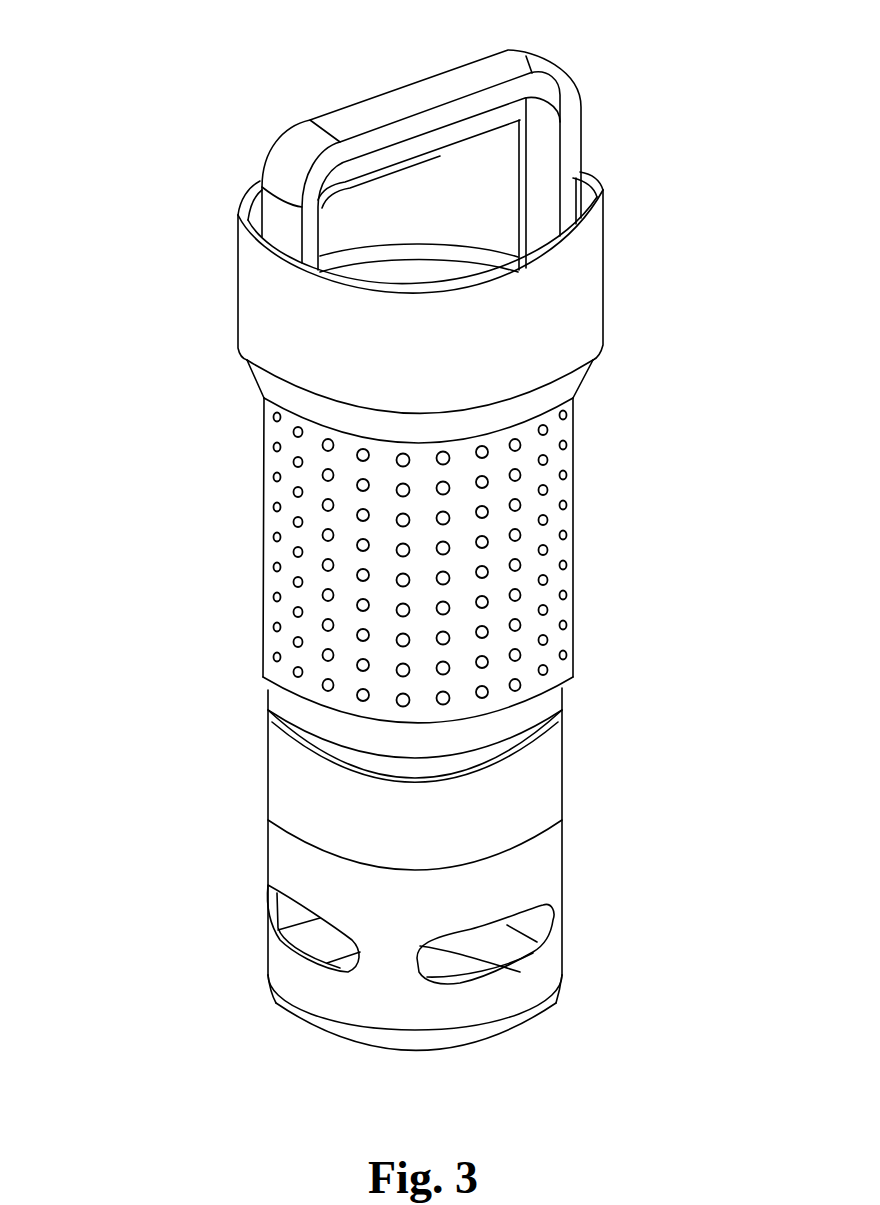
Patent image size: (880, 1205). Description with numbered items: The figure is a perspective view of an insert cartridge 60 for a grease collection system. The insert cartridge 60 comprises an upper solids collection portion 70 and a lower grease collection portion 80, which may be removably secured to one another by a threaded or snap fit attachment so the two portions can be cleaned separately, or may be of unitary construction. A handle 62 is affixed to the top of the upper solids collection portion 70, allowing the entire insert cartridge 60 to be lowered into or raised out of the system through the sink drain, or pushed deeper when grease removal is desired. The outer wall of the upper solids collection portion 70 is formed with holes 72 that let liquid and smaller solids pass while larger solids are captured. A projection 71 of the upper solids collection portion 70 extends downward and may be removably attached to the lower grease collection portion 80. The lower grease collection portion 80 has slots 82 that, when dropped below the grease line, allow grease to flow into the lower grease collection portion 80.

The insert cartridge 60 is at (185, 165).
The handle 62 is at (443, 77).
The upper solids collection portion 70 is at (573, 488).
The holes 72 is at (328, 535).
The projection 71 is at (550, 786).
The lower grease collection portion 80 is at (563, 963).
The slots 82 is at (300, 958).